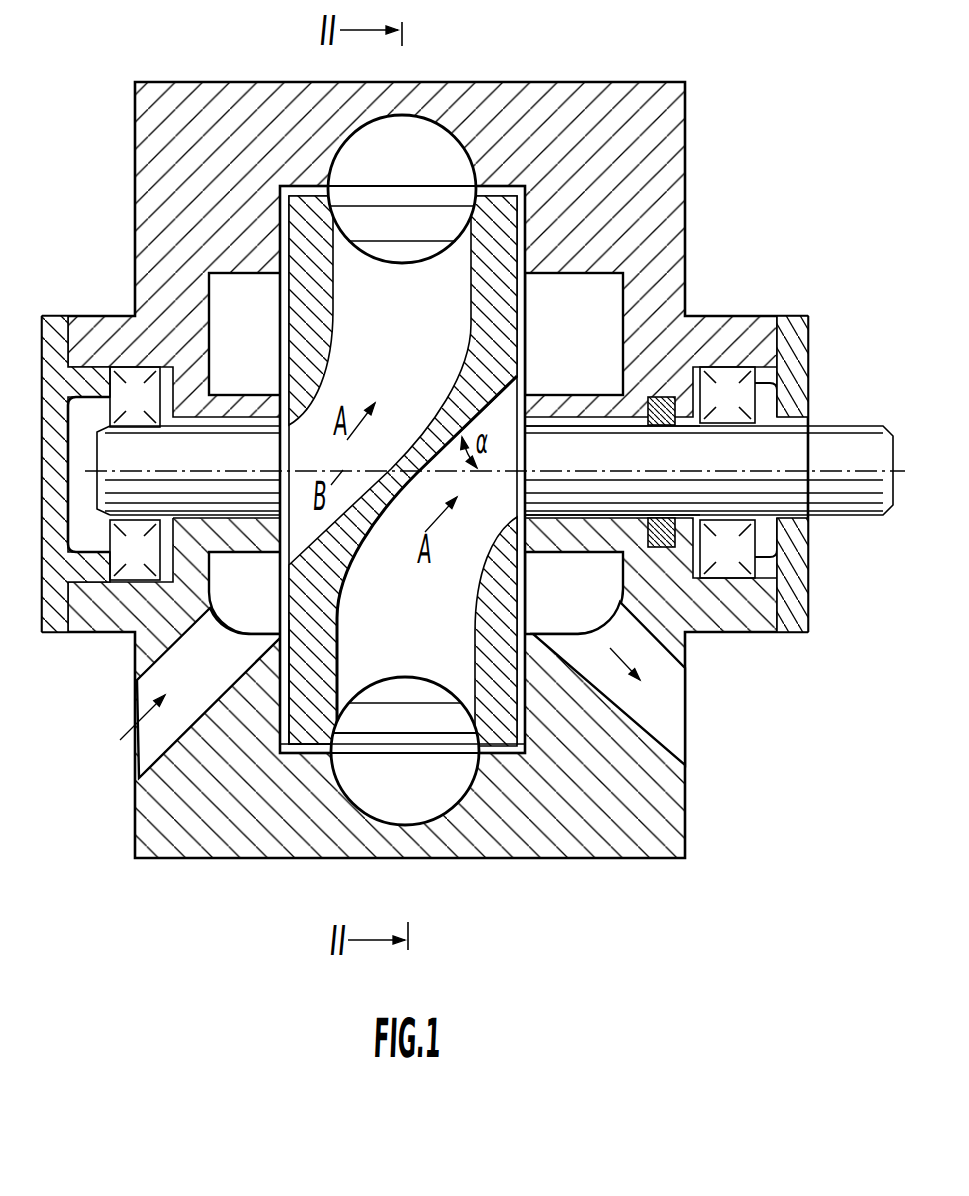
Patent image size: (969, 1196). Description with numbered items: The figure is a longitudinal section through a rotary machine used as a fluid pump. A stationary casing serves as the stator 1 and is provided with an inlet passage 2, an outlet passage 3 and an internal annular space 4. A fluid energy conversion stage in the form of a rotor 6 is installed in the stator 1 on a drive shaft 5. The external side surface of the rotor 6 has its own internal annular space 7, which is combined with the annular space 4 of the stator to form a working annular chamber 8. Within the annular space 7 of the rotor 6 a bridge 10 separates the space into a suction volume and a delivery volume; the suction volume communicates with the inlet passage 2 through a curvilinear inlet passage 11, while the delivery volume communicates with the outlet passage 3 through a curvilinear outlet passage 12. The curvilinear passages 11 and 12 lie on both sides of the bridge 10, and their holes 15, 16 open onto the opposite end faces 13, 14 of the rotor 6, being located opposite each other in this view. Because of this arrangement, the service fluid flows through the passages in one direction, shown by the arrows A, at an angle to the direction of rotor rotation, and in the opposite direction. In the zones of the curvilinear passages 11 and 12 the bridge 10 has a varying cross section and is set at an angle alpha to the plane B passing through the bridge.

The stator 1 is at (148, 806).
The inlet passage 2 is at (137, 690).
The outlet passage 3 is at (668, 722).
The internal annular space 4 is at (510, 82).
The drive shaft 5 is at (827, 438).
The rotor 6 is at (315, 665).
The internal annular space 7 is at (373, 247).
The working annular chamber 8 is at (433, 110).
The bridge 10 is at (411, 448).
The curvilinear inlet passage 11 is at (320, 375).
The curvilinear outlet passage 12 is at (440, 593).
The end face 13 is at (289, 250).
The end face 14 is at (524, 733).
The hole 15 is at (290, 445).
The hole 16 is at (521, 452).